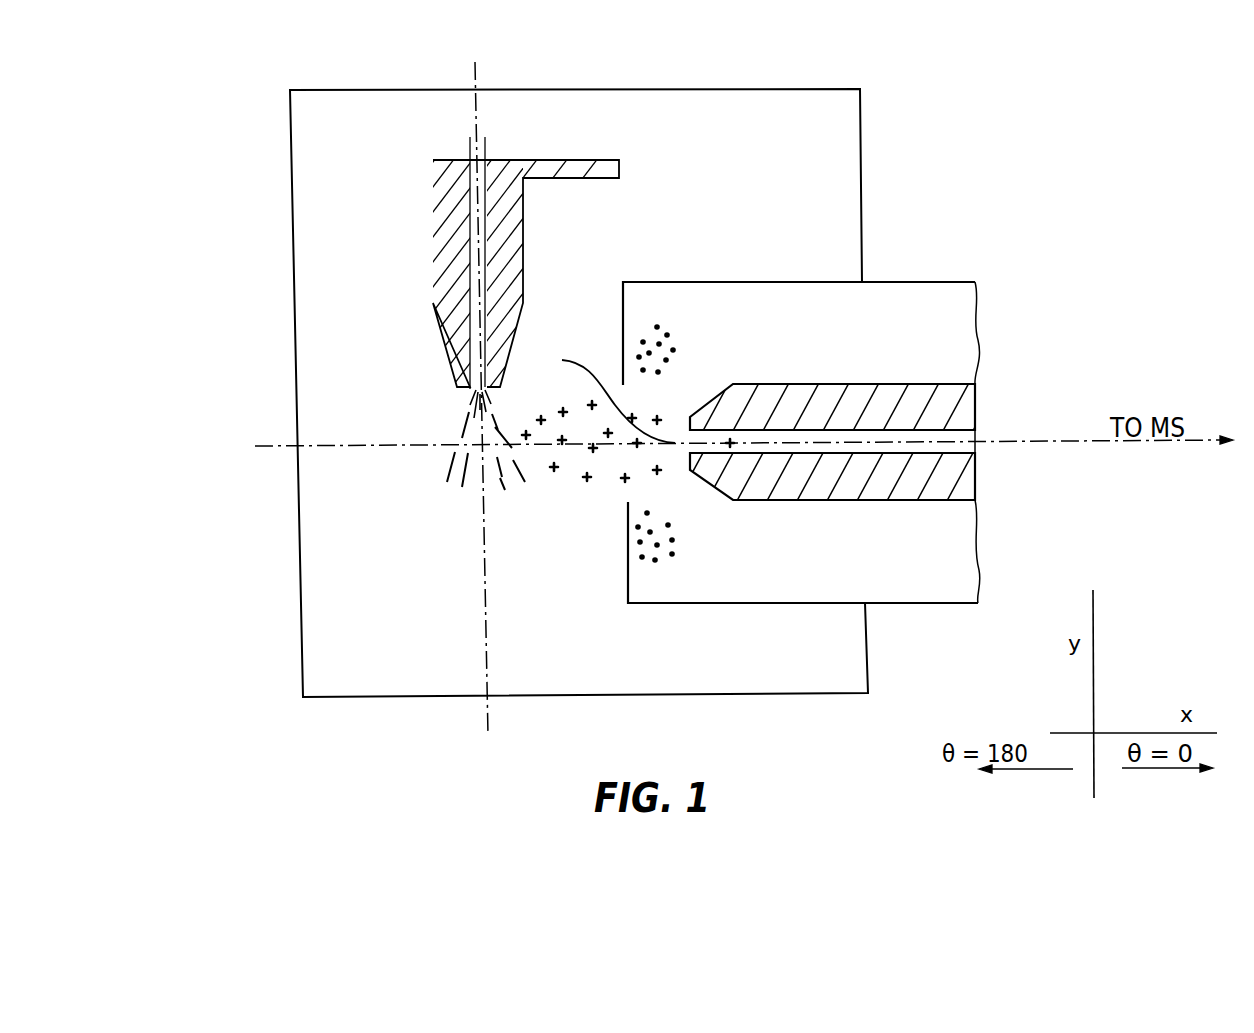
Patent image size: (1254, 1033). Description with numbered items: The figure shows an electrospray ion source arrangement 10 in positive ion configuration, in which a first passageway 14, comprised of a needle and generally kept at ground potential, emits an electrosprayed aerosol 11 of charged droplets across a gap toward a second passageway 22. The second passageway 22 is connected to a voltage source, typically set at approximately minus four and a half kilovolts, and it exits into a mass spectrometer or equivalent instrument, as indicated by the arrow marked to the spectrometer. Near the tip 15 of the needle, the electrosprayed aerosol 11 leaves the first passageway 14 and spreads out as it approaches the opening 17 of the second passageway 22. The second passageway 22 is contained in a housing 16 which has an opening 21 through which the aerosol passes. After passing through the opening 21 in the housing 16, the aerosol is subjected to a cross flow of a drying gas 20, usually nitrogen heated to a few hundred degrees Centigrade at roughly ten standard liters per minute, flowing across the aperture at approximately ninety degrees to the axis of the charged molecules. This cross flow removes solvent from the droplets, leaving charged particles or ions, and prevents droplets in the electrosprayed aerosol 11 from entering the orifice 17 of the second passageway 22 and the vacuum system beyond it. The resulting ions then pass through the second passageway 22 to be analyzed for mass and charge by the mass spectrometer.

The ion source apparatus 10 is at (194, 641).
The electrosprayed aerosol 11 is at (438, 470).
The first passageway 14 is at (476, 336).
The nozzle tip 15 is at (478, 388).
The housing 16 is at (633, 282).
The opening 17 is at (562, 360).
The drying gas 20 is at (702, 346).
The opening 21 is at (592, 503).
The second passageway 22 is at (918, 443).